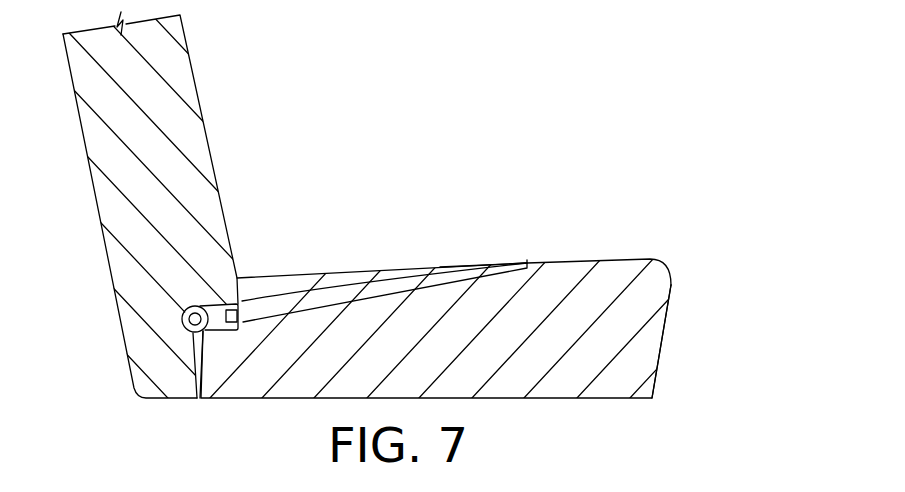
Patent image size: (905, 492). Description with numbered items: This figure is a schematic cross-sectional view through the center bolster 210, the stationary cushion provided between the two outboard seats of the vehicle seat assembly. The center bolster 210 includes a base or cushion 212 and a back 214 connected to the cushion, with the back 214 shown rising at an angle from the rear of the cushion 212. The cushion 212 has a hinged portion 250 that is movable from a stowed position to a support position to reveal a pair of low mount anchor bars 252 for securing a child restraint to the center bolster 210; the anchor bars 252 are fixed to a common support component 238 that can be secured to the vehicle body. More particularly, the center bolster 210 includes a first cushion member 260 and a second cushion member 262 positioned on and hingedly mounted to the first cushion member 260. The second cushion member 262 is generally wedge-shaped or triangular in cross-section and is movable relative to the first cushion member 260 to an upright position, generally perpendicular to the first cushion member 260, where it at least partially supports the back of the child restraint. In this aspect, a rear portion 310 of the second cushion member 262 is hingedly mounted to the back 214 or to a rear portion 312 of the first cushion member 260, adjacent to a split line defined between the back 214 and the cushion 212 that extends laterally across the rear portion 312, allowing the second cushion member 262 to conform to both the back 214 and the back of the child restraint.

The center bolster 210 is at (684, 248).
The cushion 212 is at (618, 260).
The back 214 is at (203, 101).
The support component 238 is at (190, 333).
The hinged portion 250 is at (456, 262).
The low mount anchor bars 252 is at (202, 398).
The first cushion member 260 is at (666, 285).
The second cushion member 262 is at (367, 275).
The rear portion of the second cushion member 310 is at (242, 282).
The rear portion of the first cushion member 312 is at (238, 330).